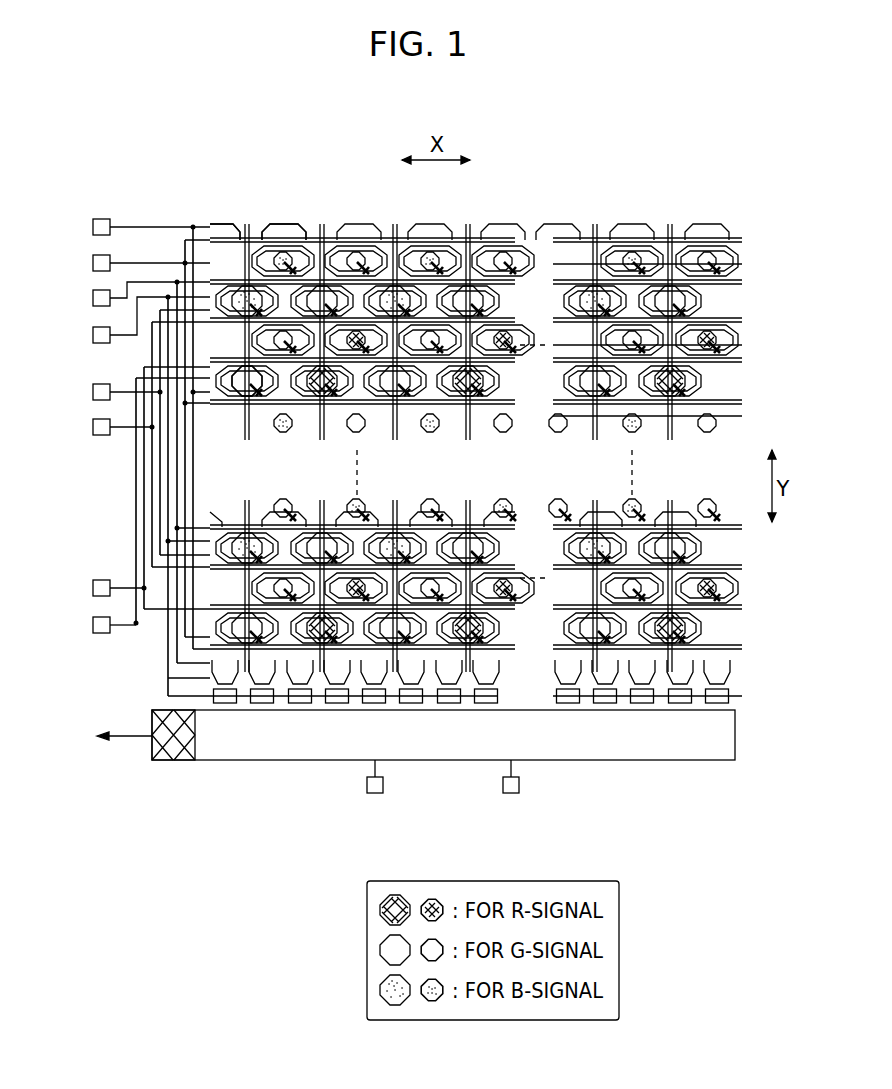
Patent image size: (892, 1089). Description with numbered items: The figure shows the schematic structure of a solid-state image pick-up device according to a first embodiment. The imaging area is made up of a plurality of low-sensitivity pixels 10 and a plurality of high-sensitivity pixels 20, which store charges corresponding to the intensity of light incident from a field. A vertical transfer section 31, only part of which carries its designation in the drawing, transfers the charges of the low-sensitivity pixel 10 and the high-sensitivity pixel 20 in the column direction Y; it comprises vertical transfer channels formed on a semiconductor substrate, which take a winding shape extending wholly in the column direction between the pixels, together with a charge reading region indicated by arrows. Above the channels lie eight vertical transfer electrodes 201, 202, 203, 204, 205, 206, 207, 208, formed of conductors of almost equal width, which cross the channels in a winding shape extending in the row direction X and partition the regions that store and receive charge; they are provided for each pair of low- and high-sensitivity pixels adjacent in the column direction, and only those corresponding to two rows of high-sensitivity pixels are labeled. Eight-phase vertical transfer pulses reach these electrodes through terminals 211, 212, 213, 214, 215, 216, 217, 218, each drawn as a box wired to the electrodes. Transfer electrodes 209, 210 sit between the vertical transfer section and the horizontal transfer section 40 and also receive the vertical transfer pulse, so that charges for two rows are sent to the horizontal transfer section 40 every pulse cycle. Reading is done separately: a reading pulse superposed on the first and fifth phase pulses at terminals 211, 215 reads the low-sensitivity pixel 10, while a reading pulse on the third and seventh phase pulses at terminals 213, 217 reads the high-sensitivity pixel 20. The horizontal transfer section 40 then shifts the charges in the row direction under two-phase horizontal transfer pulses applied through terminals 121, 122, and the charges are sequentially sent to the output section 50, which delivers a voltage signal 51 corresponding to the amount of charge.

The low-sensitivity pixel 10 is at (288, 498).
The high-sensitivity pixel 20 is at (252, 388).
The vertical transfer section 31 is at (220, 222).
The horizontal transfer section 40 is at (652, 760).
The output section 50 is at (172, 760).
The voltage signal 51 is at (128, 738).
The terminal 121 is at (511, 794).
The terminal 122 is at (375, 794).
The vertical transfer electrode 201 is at (742, 264).
The vertical transfer electrode 202 is at (742, 279).
The vertical transfer electrode 203 is at (742, 323).
The vertical transfer electrode 204 is at (742, 338).
The vertical transfer electrode 205 is at (742, 351).
The vertical transfer electrode 206 is at (742, 362).
The vertical transfer electrode 207 is at (742, 404).
The vertical transfer electrode 208 is at (742, 416).
The transfer electrode 209 is at (742, 689).
The transfer electrode 210 is at (742, 697).
The terminal 211 is at (92, 298).
The terminal 212 is at (92, 335).
The terminal 213 is at (92, 392).
The terminal 214 is at (92, 427).
The terminal 215 is at (92, 588).
The terminal 216 is at (92, 625).
The terminal 217 is at (92, 227).
The terminal 218 is at (92, 263).